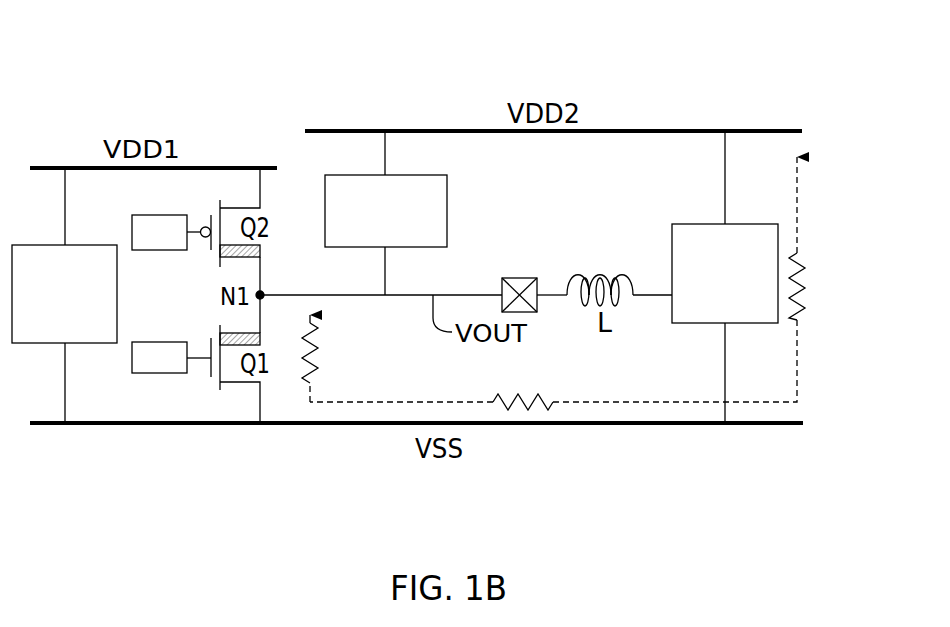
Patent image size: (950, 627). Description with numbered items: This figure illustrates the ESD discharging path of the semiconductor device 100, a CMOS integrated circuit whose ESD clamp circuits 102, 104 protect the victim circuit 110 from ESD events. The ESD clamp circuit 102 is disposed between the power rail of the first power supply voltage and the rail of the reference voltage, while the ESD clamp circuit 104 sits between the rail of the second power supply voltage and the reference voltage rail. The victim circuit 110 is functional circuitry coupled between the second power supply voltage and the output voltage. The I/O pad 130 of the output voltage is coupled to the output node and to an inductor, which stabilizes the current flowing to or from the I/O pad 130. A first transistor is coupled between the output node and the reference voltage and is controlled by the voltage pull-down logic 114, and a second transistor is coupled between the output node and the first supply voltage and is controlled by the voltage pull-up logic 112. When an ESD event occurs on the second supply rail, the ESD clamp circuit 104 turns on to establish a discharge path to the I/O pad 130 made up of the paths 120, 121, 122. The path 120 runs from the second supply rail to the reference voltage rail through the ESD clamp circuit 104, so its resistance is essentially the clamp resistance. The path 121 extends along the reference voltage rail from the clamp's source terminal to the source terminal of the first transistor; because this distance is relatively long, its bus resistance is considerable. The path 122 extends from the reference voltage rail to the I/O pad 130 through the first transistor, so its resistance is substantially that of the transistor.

The semiconductor device 100 is at (77, 35).
The ESD clamp circuit 102 is at (42, 245).
The ESD clamp circuit 104 is at (687, 224).
The victim circuit 110 is at (353, 175).
The voltage pull-up logic 112 is at (153, 215).
The voltage pull-down logic 114 is at (158, 374).
The path 120 is at (798, 350).
The path 121 is at (423, 402).
The path 122 is at (317, 322).
The I/O pad 130 is at (522, 277).